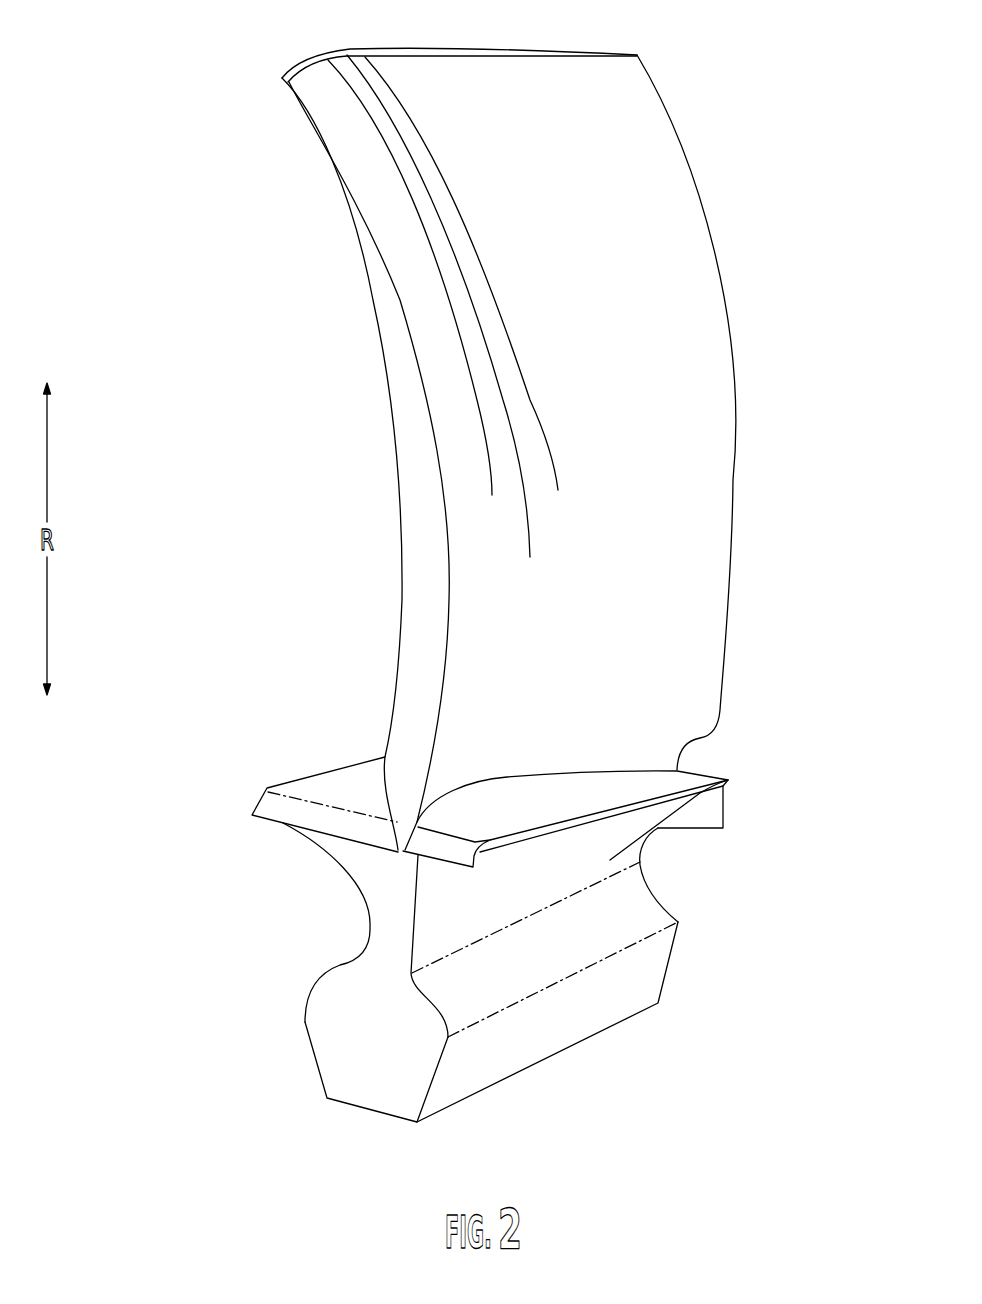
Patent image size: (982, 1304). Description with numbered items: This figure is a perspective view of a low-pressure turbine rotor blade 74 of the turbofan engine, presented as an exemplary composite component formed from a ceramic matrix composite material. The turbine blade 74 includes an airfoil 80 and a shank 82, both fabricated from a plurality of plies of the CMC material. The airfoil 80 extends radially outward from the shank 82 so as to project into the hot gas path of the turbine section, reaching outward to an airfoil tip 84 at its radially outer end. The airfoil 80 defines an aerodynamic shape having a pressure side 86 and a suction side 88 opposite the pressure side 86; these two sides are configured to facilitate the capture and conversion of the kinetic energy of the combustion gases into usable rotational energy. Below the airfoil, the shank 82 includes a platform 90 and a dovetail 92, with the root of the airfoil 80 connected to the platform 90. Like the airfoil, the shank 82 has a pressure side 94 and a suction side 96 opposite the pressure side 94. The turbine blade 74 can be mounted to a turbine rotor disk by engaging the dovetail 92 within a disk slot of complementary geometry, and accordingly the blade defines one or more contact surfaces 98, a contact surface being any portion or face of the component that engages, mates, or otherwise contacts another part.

The LP turbine rotor blade 74 is at (128, 118).
The airfoil 80 is at (741, 189).
The shank 82 is at (240, 974).
The airfoil tip 84 is at (652, 52).
The pressure side 86 is at (690, 437).
The suction side 88 is at (414, 537).
The platform 90 is at (317, 788).
The dovetail 92 is at (338, 1043).
The pressure side 94 is at (563, 1023).
The suction side 96 is at (348, 960).
The contact surface 98 is at (632, 909).